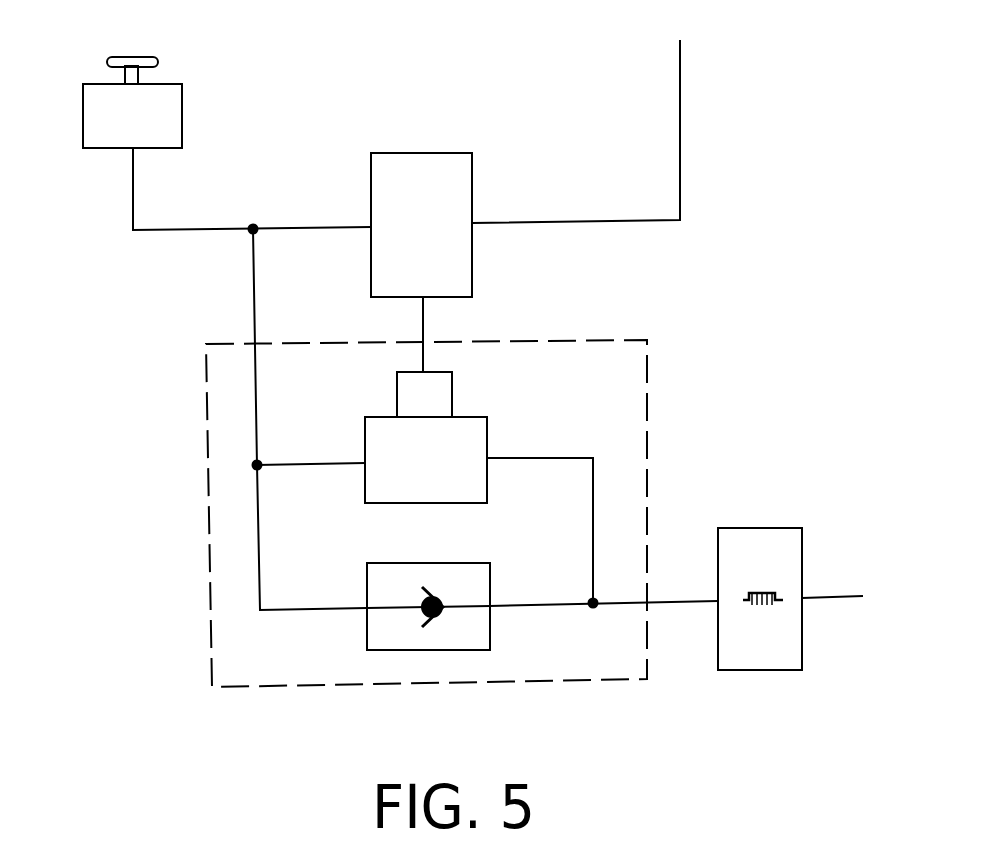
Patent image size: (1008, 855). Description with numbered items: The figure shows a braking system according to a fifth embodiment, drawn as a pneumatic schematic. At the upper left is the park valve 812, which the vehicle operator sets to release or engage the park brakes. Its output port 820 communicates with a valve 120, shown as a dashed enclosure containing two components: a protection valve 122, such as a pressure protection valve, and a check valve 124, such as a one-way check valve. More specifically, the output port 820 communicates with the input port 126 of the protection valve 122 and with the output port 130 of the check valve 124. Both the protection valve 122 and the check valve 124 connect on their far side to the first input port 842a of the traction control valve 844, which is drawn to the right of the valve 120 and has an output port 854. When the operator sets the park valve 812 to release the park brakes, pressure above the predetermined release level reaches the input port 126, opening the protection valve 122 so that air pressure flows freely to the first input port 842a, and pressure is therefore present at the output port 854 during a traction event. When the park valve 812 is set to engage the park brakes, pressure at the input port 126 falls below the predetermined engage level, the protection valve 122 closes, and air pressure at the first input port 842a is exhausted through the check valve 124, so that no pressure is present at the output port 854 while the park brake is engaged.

The park valve 812 is at (168, 83).
The output port 820 is at (128, 149).
The valve 120 is at (207, 502).
The input port 126 is at (363, 462).
The protection valve 122 is at (473, 416).
The output port 130 is at (367, 608).
The check valve 124 is at (490, 627).
The first input port 842a is at (715, 602).
The traction control valve 844 is at (758, 528).
The output port 854 is at (802, 604).